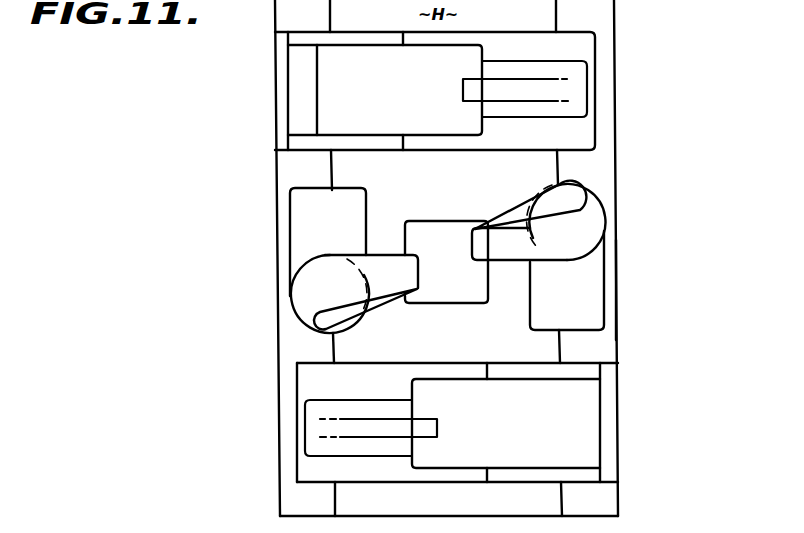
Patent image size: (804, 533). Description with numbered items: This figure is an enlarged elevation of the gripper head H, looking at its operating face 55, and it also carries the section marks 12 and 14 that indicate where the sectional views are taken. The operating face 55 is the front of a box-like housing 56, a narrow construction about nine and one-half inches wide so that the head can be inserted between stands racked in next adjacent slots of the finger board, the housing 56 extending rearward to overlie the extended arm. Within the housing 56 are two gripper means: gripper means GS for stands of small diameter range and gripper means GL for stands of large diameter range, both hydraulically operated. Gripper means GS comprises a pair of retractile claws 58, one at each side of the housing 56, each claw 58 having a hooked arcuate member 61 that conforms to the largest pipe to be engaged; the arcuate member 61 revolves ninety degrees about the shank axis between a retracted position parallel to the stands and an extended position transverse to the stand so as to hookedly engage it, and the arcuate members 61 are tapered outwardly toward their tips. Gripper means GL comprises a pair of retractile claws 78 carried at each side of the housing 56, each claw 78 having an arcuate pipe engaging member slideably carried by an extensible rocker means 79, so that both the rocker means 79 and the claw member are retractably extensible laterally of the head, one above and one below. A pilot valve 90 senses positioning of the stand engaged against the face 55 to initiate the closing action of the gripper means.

The section line 12- 12 is at (262, 228).
The section line 14- 14 is at (260, 83).
The operating face 55 is at (447, 259).
The box-like housing 56 is at (610, 293).
The retractile claw 58 is at (312, 302).
The arcuate member 61 is at (385, 265).
The retractile claw 78 is at (574, 65).
The rocker means 79 is at (483, 130).
The pilot valve 90 is at (446, 262).